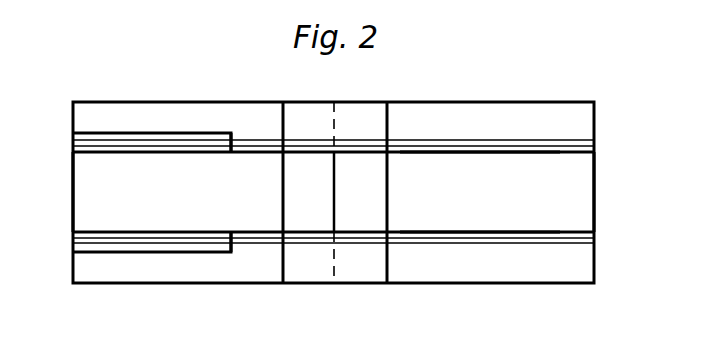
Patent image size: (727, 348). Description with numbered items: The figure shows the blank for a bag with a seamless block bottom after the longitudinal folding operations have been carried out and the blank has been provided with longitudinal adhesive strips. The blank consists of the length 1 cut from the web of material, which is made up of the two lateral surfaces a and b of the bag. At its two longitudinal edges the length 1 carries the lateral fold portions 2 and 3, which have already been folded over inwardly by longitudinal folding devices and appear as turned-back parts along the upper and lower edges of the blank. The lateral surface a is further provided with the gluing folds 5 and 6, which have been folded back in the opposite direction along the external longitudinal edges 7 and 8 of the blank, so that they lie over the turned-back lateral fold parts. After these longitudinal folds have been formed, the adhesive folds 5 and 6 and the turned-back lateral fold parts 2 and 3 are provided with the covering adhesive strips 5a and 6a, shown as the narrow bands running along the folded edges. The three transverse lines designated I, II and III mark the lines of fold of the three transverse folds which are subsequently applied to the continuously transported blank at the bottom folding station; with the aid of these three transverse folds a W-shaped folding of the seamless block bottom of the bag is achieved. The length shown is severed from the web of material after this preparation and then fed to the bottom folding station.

The length of material web 1 is at (577, 172).
The lateral fold portion 2 is at (583, 125).
The lateral fold portion 3 is at (575, 262).
The gluing fold 5 is at (130, 283).
The covering adhesive strip 5a is at (208, 283).
The gluing fold 6 is at (141, 138).
The covering adhesive strip 6a is at (250, 146).
The external longitudinal edge 7 is at (479, 159).
The external longitudinal edge 8 is at (488, 232).
The lateral surface of the bag a is at (87, 200).
The lateral surface of the bag b is at (578, 207).
The transverse fold line I is at (329, 195).
The transverse fold line II is at (384, 195).
The transverse fold line III is at (278, 195).